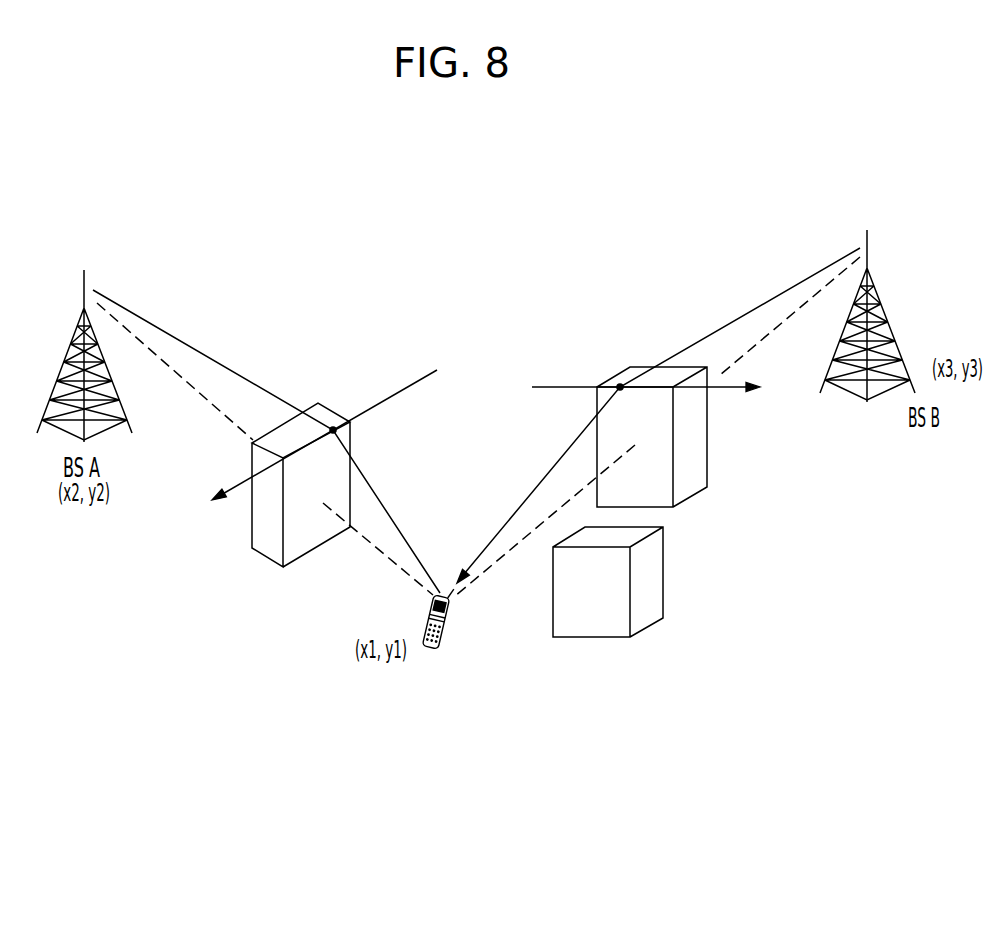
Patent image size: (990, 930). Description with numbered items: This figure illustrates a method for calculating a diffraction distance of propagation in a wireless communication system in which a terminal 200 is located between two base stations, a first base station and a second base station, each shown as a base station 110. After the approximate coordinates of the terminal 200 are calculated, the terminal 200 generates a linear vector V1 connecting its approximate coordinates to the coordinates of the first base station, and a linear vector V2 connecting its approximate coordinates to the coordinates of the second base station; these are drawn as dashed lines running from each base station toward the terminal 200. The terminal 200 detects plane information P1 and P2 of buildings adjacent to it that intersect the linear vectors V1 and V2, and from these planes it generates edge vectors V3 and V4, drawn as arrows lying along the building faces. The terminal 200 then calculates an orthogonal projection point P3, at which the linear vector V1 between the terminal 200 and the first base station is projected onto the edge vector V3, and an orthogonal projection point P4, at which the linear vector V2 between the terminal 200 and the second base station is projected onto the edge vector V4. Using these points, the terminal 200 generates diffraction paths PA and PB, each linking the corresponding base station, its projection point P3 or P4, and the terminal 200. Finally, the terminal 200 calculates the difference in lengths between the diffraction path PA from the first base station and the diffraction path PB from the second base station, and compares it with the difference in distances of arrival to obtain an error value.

The base station 110 is at (878, 300).
The terminal 200 is at (452, 628).
The plane information of building P1 is at (293, 533).
The plane information of building P2 is at (662, 480).
The orthogonal projection point P3 is at (334, 430).
The orthogonal projection point P4 is at (620, 387).
The linear vector V1 is at (146, 345).
The linear vector V2 is at (813, 290).
The edge vector V3 is at (388, 399).
The edge vector V4 is at (727, 392).
The diffraction path PA is at (210, 357).
The diffraction path PB is at (765, 303).